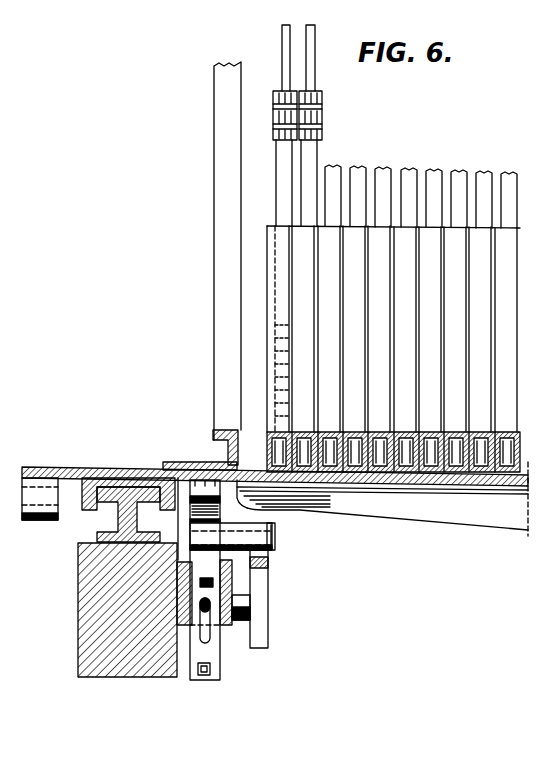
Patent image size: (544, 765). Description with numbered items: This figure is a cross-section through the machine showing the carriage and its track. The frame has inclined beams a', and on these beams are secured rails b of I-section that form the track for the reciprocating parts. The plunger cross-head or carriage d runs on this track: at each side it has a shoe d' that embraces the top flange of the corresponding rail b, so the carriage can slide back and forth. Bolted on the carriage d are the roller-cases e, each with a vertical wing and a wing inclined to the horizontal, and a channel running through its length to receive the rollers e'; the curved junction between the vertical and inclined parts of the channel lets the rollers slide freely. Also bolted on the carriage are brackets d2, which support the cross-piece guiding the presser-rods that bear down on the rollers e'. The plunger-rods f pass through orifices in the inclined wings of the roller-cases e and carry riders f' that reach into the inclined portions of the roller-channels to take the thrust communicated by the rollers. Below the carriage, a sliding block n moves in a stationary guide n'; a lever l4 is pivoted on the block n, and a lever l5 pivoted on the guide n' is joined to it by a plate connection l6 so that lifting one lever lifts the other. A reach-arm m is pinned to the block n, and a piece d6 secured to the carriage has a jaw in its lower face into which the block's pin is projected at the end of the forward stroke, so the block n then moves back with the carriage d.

The inclined beams a' is at (110, 610).
The rails b is at (118, 521).
The plunger cross-head or carriage d is at (275, 493).
The shoe d' is at (98, 499).
The brackets d2 is at (218, 258).
The piece secured to the carriage d6 is at (193, 470).
The roller-cases e is at (404, 297).
The rollers e' is at (293, 329).
The plunger-rods f is at (382, 492).
The valve block f' is at (393, 441).
The lever l4 is at (232, 578).
The lever l5 is at (207, 676).
The plate connection l6 is at (193, 655).
The reach-arm m is at (252, 601).
The sliding block n is at (221, 531).
The stationary guide n' is at (259, 599).